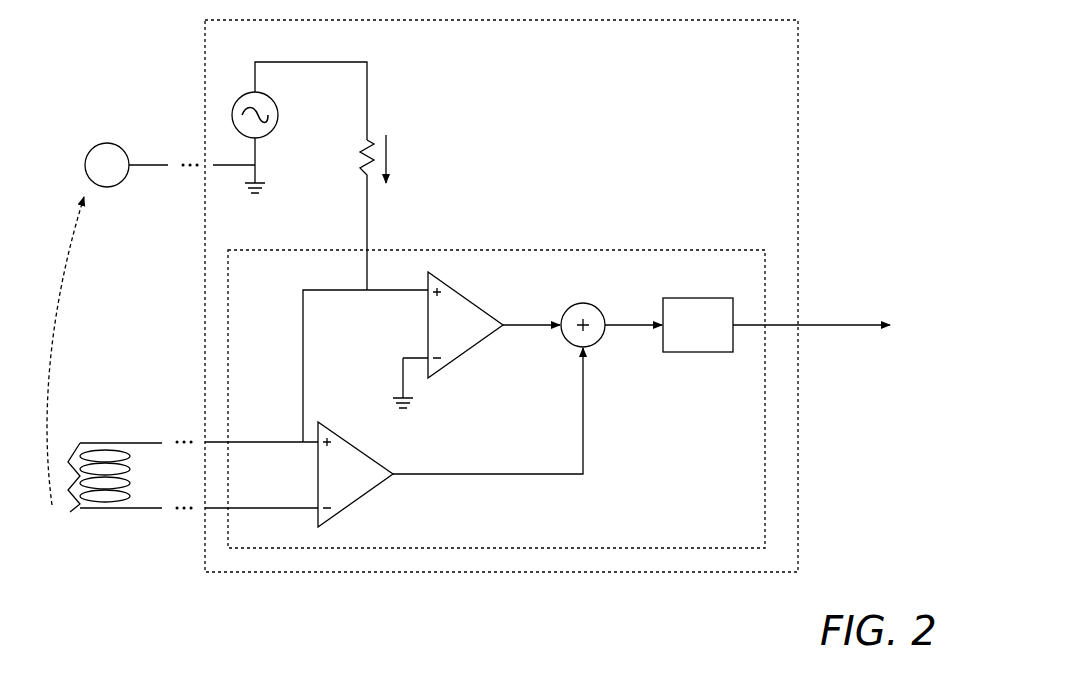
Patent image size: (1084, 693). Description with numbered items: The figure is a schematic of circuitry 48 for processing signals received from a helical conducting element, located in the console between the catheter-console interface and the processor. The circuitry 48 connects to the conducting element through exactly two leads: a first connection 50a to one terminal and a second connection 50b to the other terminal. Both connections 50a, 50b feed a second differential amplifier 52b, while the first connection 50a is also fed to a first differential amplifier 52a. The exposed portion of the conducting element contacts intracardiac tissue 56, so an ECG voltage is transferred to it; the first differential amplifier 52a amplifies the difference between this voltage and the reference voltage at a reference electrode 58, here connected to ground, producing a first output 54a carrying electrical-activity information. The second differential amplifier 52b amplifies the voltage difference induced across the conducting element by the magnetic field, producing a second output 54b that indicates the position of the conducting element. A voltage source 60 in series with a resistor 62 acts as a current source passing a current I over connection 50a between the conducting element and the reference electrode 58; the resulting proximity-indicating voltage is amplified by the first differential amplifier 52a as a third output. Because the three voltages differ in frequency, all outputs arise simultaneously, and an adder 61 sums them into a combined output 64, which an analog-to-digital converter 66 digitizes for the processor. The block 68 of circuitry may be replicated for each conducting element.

The circuitry 48 is at (798, 137).
The first connection 50a is at (262, 440).
The second connection 50b is at (265, 510).
The first differential amplifier 52a is at (428, 322).
The second differential amplifier 52b is at (352, 508).
The first output 54a is at (527, 369).
The second output 54b is at (583, 450).
The intracardiac tissue 56 is at (70, 512).
The reference electrode 58 is at (112, 187).
The voltage source 60 is at (240, 104).
The adder 61 is at (584, 302).
The resistor 62 is at (361, 152).
The combined output 64 is at (620, 326).
The analog-to-digital converter 66 is at (698, 352).
The block of circuitry 68 is at (699, 250).